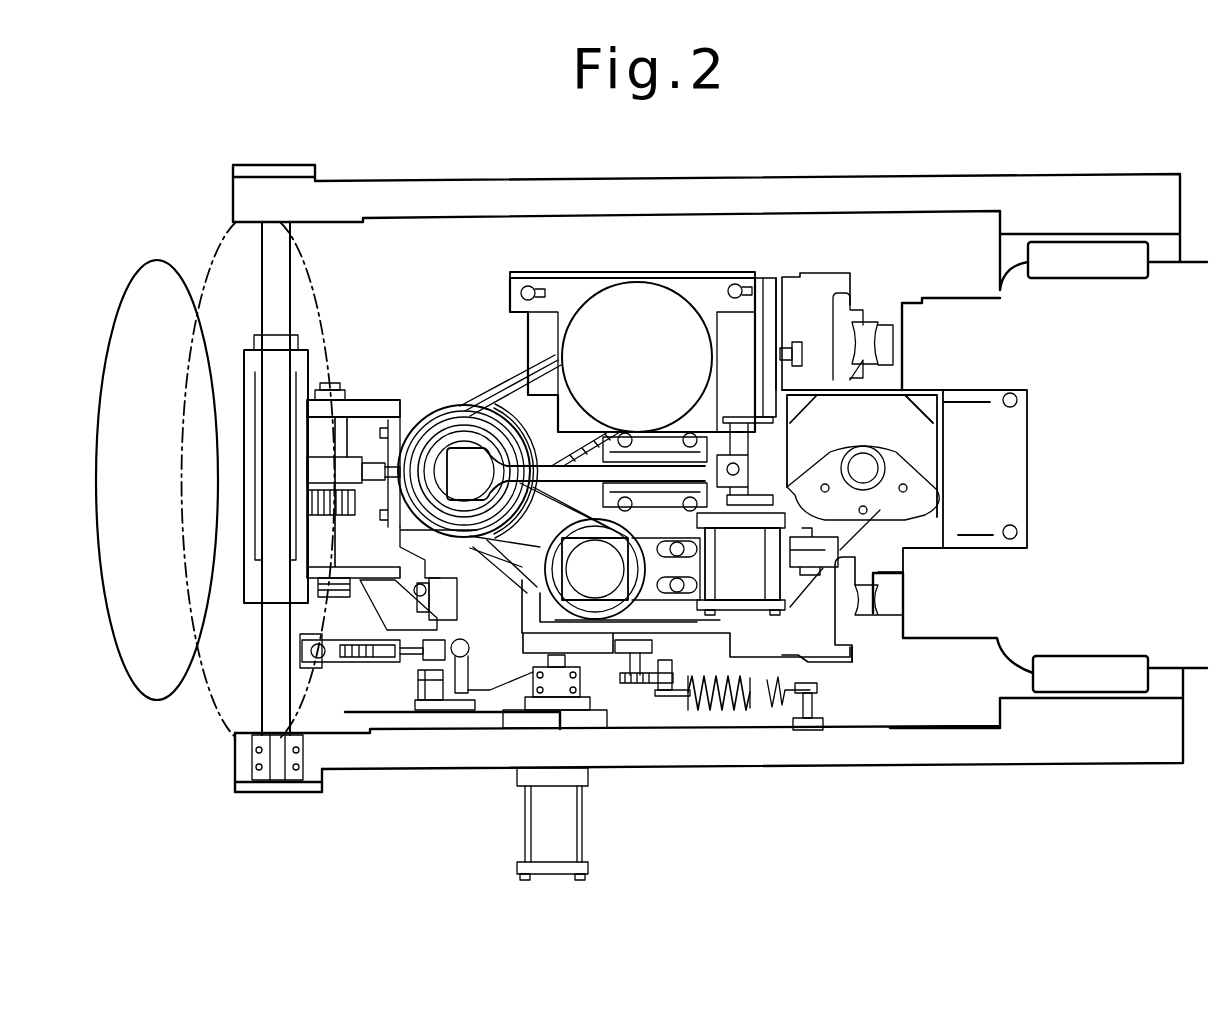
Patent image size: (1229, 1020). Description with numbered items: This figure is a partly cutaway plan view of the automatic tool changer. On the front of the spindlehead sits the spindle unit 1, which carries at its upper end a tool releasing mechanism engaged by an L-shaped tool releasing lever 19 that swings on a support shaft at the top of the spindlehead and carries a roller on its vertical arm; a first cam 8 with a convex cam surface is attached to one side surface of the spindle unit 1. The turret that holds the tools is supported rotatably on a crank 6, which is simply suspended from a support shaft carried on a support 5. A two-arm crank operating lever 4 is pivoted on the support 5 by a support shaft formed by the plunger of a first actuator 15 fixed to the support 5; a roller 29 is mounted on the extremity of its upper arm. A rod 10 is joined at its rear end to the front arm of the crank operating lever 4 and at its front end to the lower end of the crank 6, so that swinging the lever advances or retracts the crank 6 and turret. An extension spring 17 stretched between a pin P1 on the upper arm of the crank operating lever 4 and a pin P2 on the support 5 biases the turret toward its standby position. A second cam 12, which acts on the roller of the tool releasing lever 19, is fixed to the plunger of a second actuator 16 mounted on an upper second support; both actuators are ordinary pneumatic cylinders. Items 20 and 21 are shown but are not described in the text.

The spindle unit 1 is at (433, 417).
The crank operating lever 4 is at (490, 677).
The support 5 is at (352, 192).
The crank 6 is at (265, 697).
The first cam 8 is at (532, 643).
The rod 10 is at (412, 660).
The second cam 12 is at (722, 453).
The first actuator 15 is at (575, 848).
The second actuator 16 is at (737, 585).
The extension spring 17 is at (728, 692).
The tool releasing lever 19 is at (497, 392).
The stopper 20 is at (852, 308).
The link 21 is at (645, 590).
The roller 29 is at (628, 645).
The pin P1 is at (663, 700).
The pin P2 is at (815, 683).